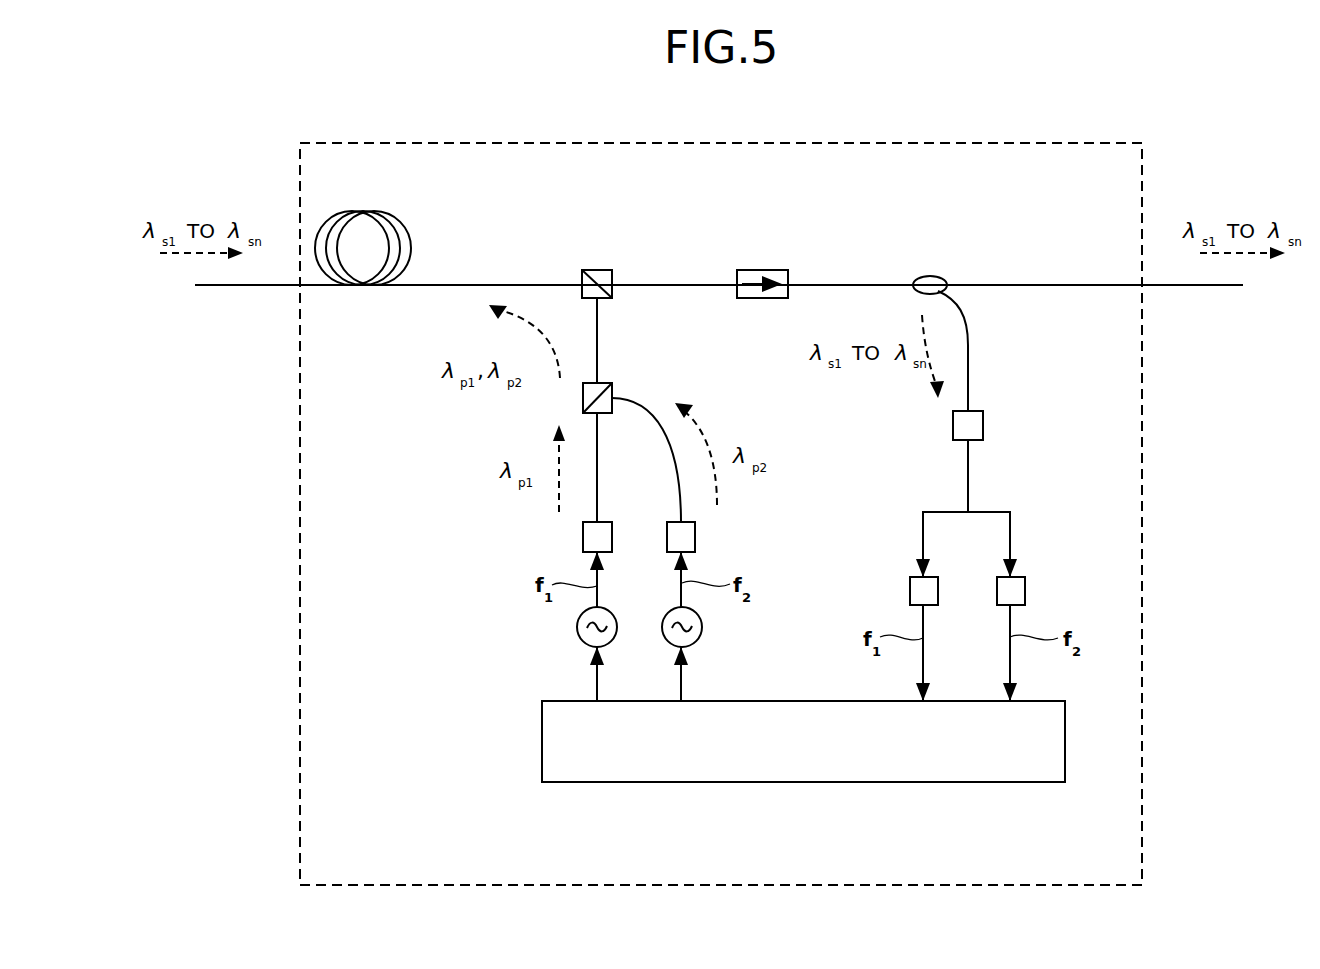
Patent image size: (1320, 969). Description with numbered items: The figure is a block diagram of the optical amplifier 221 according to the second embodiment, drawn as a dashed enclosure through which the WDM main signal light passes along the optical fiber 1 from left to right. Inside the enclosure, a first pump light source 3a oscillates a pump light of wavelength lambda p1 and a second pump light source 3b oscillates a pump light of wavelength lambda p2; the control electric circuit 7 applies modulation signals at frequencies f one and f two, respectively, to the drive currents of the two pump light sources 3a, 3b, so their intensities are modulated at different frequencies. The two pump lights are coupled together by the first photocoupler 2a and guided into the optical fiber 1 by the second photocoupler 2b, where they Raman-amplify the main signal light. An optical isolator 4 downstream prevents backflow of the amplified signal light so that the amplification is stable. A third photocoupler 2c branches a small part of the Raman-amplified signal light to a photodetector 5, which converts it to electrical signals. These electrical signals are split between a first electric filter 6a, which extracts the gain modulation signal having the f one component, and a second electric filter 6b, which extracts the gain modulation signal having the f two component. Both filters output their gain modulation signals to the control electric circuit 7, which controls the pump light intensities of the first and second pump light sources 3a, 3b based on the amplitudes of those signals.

The optical fiber 1 is at (392, 222).
The first photocoupler 2a is at (600, 383).
The second photocoupler 2b is at (608, 270).
The third photocoupler 2c is at (944, 278).
The first pump light source 3a is at (583, 538).
The second pump light source 3b is at (695, 537).
The optical isolator 4 is at (772, 270).
The photodetector 5 is at (983, 425).
The first electric filter 6a is at (910, 591).
The second electric filter 6b is at (1025, 590).
The control electric circuit 7 is at (1065, 742).
The optical amplifier 221 is at (1142, 427).